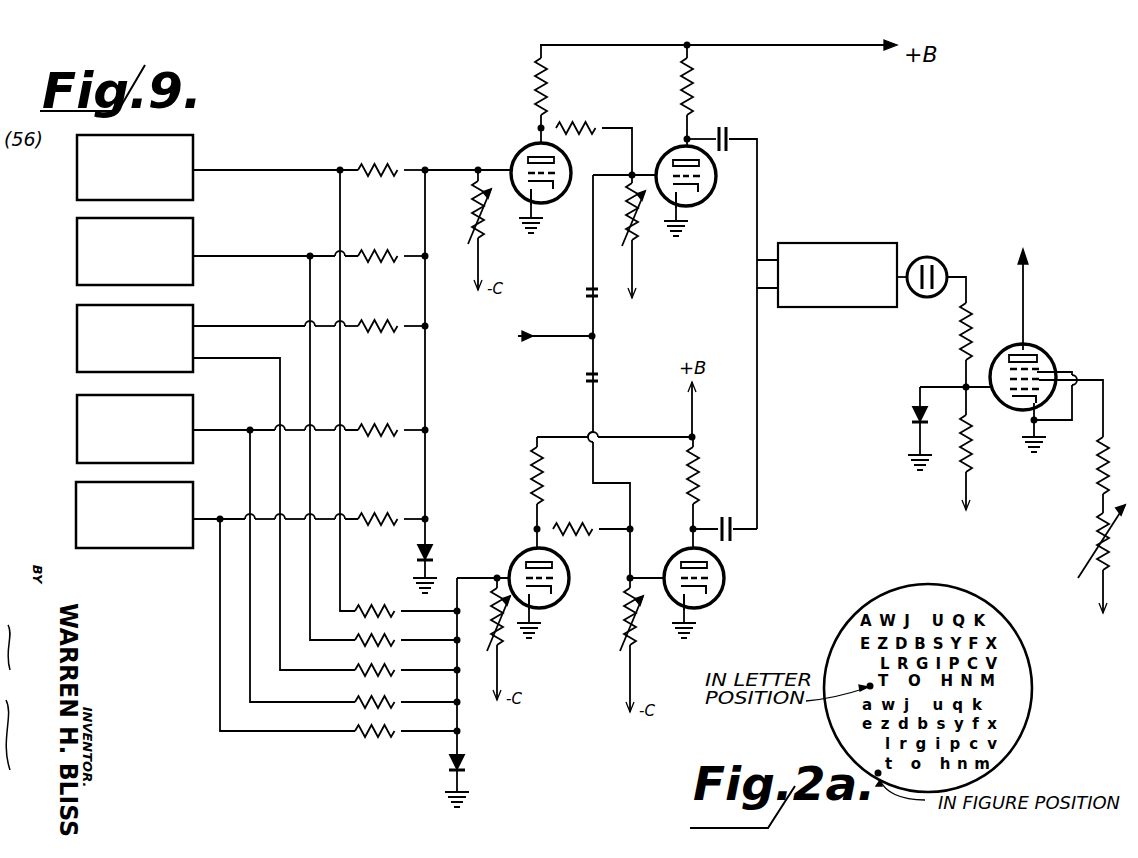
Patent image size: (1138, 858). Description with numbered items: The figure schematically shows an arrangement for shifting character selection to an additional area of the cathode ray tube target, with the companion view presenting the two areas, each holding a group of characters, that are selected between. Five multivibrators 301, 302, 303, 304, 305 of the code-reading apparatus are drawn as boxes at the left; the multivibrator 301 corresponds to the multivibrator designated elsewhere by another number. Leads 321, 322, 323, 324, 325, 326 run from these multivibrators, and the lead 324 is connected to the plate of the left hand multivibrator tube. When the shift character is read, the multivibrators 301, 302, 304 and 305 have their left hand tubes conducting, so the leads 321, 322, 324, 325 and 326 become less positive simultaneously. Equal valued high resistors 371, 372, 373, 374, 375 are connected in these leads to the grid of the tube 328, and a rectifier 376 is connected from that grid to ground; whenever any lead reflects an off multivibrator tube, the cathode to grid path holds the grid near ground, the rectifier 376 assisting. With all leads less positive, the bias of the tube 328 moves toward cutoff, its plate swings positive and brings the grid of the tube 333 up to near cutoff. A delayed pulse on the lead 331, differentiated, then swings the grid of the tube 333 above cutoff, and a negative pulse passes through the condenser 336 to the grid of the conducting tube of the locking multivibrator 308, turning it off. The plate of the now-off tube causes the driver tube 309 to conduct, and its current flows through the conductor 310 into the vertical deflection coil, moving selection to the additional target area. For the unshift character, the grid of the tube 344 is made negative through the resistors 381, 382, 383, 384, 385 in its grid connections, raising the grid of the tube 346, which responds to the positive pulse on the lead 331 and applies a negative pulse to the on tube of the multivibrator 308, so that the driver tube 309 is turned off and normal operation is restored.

The multivibrator 301 is at (78, 178).
The multivibrator 302 is at (78, 262).
The multivibrator 303 is at (78, 336).
The multivibrator 304 is at (78, 430).
The multivibrator 305 is at (78, 515).
The lead 321 is at (300, 168).
The lead 322 is at (280, 254).
The conductor 323 is at (280, 324).
The lead 324 is at (252, 370).
The lead 325 is at (207, 430).
The lead 326 is at (200, 520).
The resistor 381 is at (412, 146).
The resistor 382 is at (412, 233).
The resistor 383 is at (412, 303).
The resistor 384 is at (412, 407).
The resistor 385 is at (412, 496).
The high resistor 371 is at (398, 590).
The high resistor 372 is at (403, 642).
The high resistor 373 is at (361, 666).
The high resistor 374 is at (351, 700).
The high resistor 375 is at (370, 735).
The rectifier 376 is at (468, 770).
The tube 344 is at (567, 165).
The tube 346 is at (704, 204).
The tube 328 is at (565, 600).
The tube 333 is at (721, 598).
The lead 331 is at (578, 330).
The condenser 336 is at (733, 540).
The locking multivibrator 308 is at (882, 242).
The driver tube 309 is at (1042, 352).
The conductor 310 is at (1030, 302).